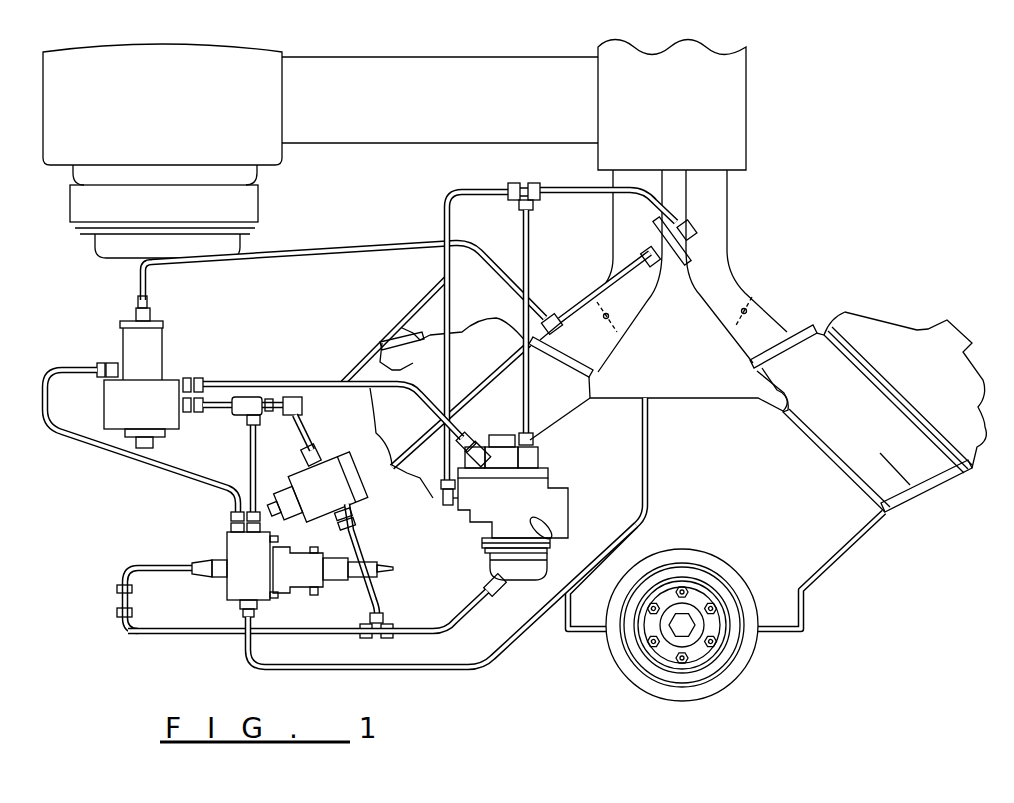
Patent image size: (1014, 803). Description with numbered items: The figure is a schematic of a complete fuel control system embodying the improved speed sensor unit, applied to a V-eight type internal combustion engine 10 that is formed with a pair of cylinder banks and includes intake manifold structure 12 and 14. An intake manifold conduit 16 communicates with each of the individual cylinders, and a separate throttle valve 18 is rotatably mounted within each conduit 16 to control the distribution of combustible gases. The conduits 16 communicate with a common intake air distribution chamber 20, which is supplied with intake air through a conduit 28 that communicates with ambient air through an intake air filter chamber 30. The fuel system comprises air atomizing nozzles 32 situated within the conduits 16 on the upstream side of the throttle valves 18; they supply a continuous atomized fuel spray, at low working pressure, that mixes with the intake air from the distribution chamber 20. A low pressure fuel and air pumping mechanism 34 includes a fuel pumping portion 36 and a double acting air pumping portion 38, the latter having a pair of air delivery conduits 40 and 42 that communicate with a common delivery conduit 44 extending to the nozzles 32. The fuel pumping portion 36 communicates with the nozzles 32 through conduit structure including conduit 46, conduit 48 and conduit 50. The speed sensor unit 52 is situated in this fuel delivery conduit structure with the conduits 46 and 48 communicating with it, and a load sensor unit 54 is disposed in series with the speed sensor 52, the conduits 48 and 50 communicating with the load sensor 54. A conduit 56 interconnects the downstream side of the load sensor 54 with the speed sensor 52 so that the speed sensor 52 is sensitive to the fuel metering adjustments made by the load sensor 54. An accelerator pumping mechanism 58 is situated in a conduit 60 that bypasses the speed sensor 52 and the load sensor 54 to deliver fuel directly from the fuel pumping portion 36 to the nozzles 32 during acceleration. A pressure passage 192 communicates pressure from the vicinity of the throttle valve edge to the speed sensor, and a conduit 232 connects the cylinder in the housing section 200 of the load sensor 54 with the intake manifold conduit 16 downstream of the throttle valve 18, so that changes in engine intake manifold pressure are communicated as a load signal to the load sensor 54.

The internal combustion engine 10 is at (708, 476).
The intake manifold structure 12 is at (500, 407).
The intake manifold structure 14 is at (856, 414).
The intake manifold conduit 16 is at (738, 278).
The throttle valve 18 is at (763, 297).
The intake air distribution chamber 20 is at (676, 104).
The conduit 28 is at (432, 112).
The intake air filter chamber 30 is at (188, 119).
The air atomizing nozzle 32 is at (682, 250).
The fuel and air pumping mechanism 34 is at (542, 500).
The fuel pumping portion 36 is at (550, 558).
The air pumping portion 38 is at (540, 447).
The air delivery conduit 40 is at (530, 228).
The air delivery conduit 42 is at (443, 222).
The common delivery conduit 44 is at (545, 185).
The conduit 46 is at (300, 616).
The conduit 48 is at (183, 467).
The conduit 50 is at (378, 366).
The speed sensor unit 52 is at (242, 548).
The load sensor unit 54 is at (152, 414).
The conduit 56 is at (268, 455).
The accelerator pumping mechanism 58 is at (328, 457).
The conduit 60 is at (357, 533).
The pressure passage 192 is at (533, 622).
The second housing section 200 is at (414, 382).
The conduit 232 is at (333, 237).